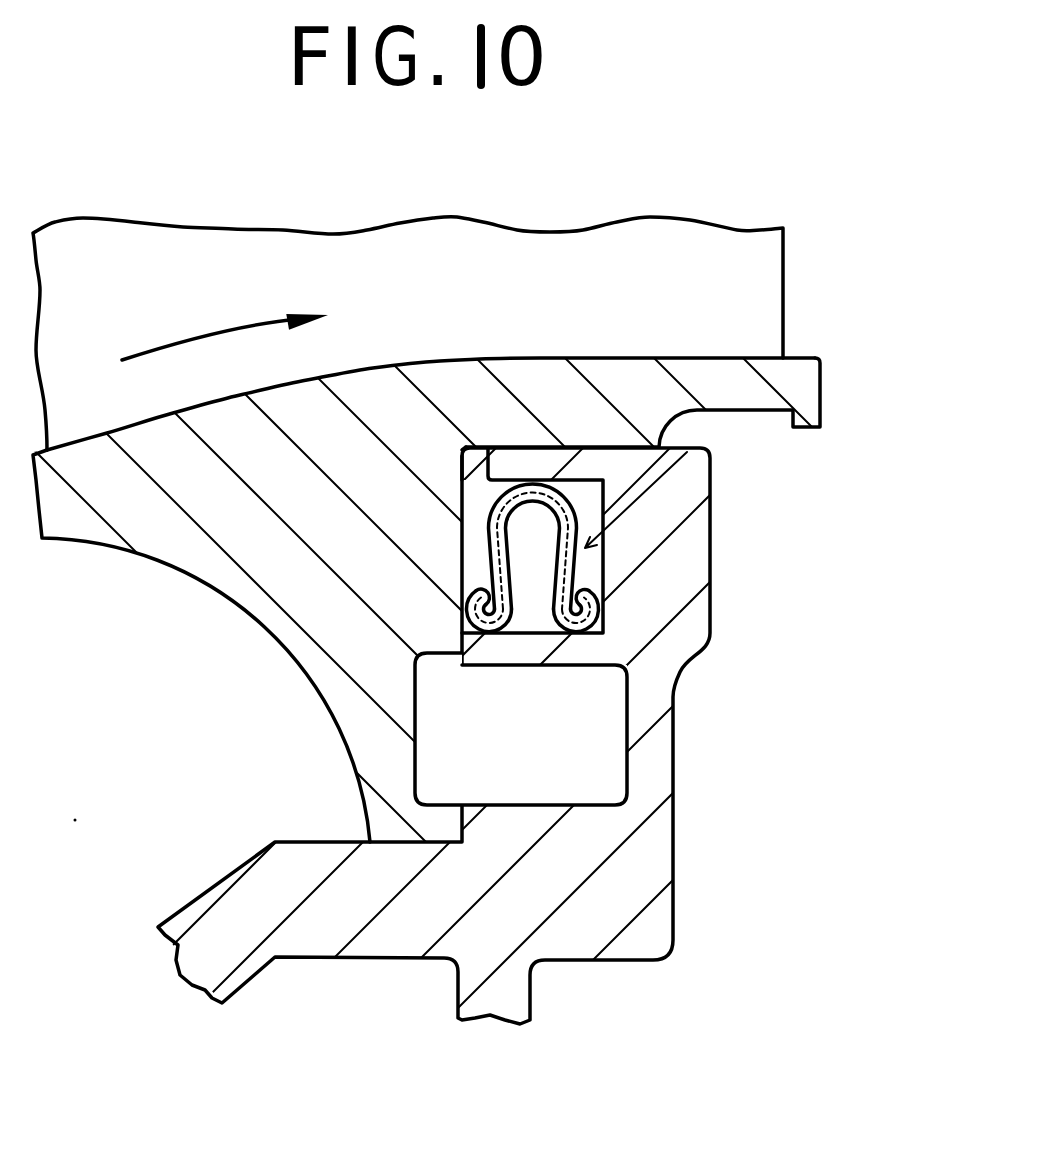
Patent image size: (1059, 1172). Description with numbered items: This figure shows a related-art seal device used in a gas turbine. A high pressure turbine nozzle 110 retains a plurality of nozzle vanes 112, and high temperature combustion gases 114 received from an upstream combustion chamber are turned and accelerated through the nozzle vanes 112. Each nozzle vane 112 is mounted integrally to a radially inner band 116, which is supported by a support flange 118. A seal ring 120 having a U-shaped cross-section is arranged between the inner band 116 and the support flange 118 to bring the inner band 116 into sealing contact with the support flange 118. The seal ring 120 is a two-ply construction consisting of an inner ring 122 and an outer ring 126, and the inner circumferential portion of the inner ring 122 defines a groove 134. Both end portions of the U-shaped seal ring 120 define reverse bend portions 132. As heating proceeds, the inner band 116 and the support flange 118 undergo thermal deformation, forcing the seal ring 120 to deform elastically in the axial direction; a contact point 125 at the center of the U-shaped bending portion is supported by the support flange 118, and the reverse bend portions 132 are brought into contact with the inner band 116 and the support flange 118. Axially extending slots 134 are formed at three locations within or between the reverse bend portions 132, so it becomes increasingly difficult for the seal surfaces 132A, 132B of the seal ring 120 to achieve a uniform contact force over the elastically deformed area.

The high pressure turbine nozzle 110 is at (805, 350).
The nozzle vane 112 is at (412, 301).
The high temperature combustion gases 114 is at (222, 330).
The radially inner band 116 is at (187, 502).
The support flange 118 is at (513, 902).
The seal ring 120 is at (606, 533).
The inner ring 122 is at (530, 603).
The contact point 125 is at (540, 480).
The outer ring 126 is at (487, 497).
The reverse bend portion 132 is at (590, 596).
The seal surface 132A is at (467, 611).
The seal surface 132B is at (606, 624).
The groove 134 is at (584, 563).